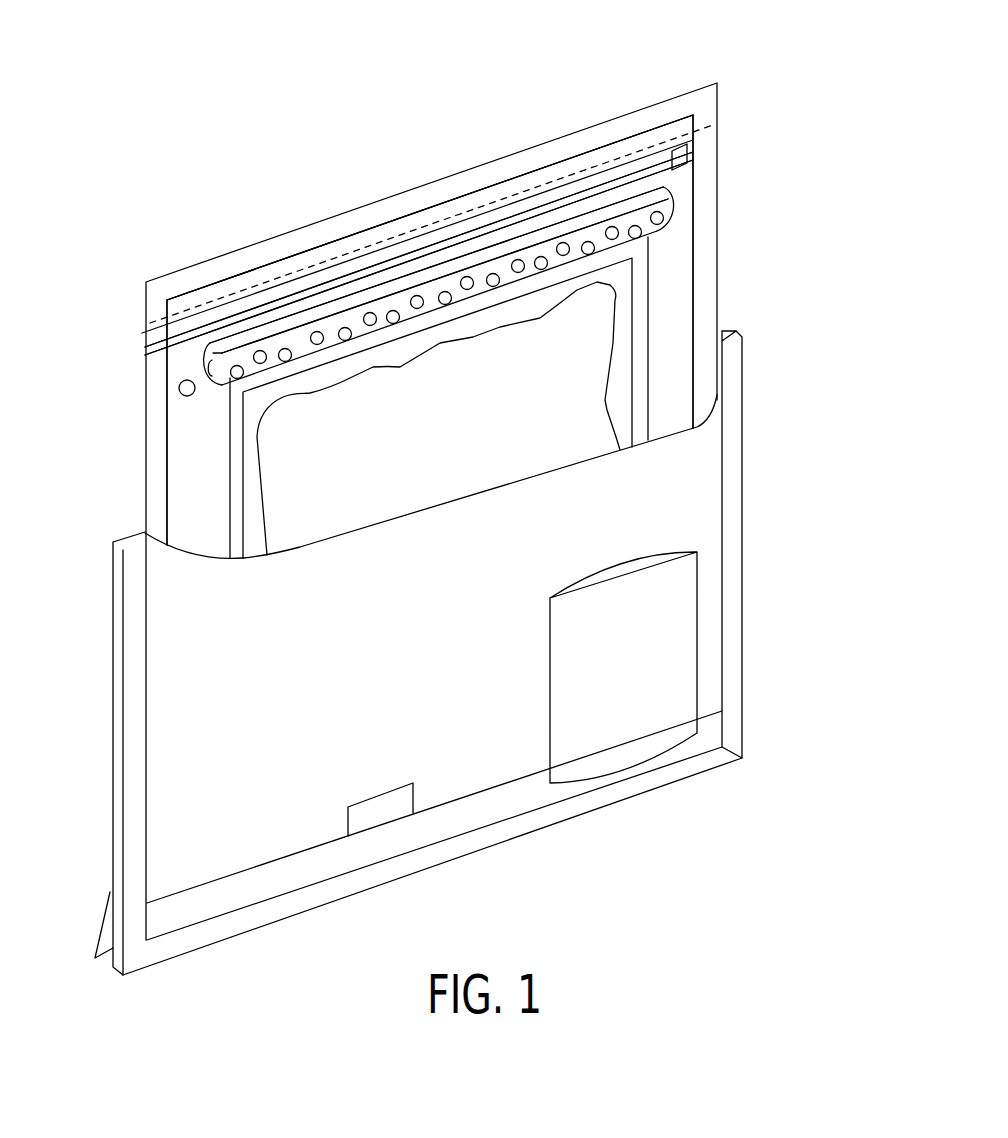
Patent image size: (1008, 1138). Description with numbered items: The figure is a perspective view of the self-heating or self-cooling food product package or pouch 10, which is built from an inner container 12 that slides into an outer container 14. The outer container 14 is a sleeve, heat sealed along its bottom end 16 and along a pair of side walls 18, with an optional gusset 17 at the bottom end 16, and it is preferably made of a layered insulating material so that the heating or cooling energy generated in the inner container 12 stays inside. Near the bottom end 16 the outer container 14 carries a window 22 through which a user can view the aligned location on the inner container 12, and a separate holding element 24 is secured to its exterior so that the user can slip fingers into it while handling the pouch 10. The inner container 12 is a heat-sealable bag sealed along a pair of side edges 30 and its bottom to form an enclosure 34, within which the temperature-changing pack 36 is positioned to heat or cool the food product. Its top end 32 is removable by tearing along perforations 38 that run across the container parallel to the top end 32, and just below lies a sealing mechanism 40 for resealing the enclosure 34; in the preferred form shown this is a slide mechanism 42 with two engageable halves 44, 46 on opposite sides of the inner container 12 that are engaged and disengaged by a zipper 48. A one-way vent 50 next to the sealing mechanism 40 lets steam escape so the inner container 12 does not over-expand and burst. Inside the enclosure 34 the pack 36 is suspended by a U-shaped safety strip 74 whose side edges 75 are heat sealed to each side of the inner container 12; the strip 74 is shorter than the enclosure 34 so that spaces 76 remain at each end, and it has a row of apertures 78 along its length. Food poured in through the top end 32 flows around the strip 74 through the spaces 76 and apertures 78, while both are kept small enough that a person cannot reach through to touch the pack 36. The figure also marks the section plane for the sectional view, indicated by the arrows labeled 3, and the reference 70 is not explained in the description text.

The self-heating/self-cooling food product package or pouch 10 is at (808, 88).
The inner container 12 is at (740, 161).
The outer container 14 is at (778, 498).
The bottom end 16 is at (155, 976).
The gusset 17 is at (106, 926).
The side walls 18 is at (742, 592).
The window 22 is at (380, 808).
The holding element 24 is at (642, 681).
The side edges 30 is at (718, 313).
The top end 32 is at (305, 236).
The enclosure 34 is at (170, 452).
The temperature-changing pack 36 is at (655, 305).
The perforations 38 is at (232, 293).
The sealing mechanism 40 is at (147, 339).
The slide mechanism 42 is at (598, 186).
The engageable half 44 is at (343, 208).
The engageable half 46 is at (272, 300).
The zipper 48 is at (681, 145).
The vent 50 is at (176, 381).
The pocket top edge 70 is at (143, 537).
The safety strip 74 is at (537, 240).
The side edges 75 is at (467, 273).
The spaces 76 is at (185, 362).
The apertures 78 is at (420, 306).
The section line 3 is at (93, 290).